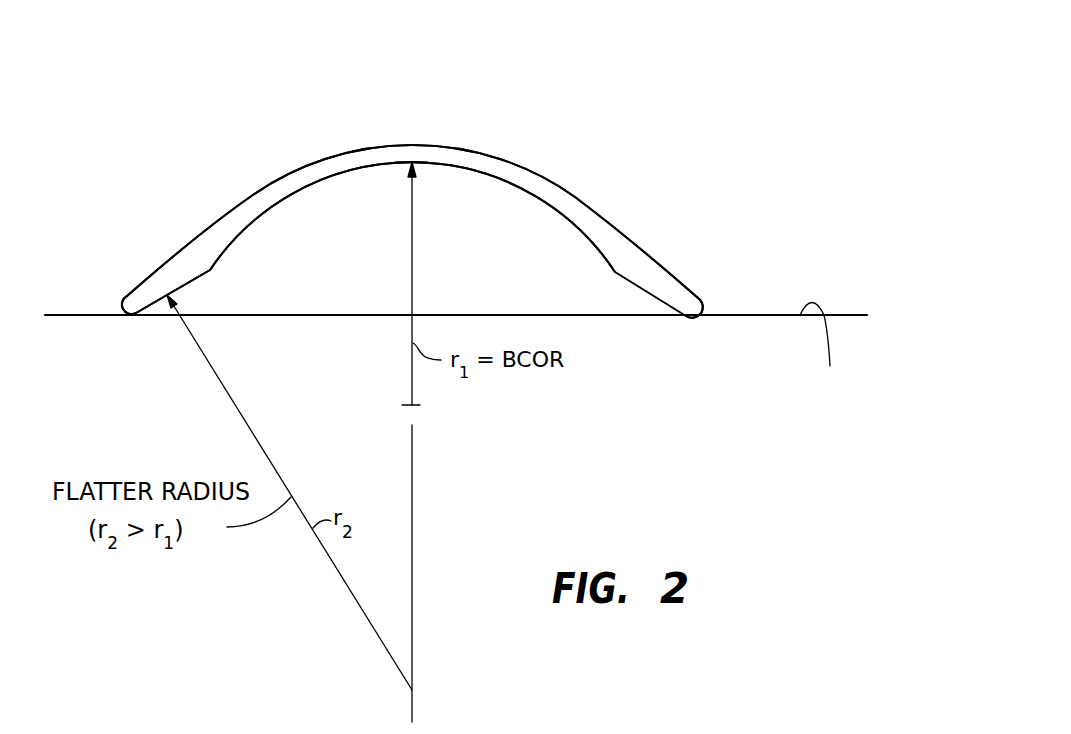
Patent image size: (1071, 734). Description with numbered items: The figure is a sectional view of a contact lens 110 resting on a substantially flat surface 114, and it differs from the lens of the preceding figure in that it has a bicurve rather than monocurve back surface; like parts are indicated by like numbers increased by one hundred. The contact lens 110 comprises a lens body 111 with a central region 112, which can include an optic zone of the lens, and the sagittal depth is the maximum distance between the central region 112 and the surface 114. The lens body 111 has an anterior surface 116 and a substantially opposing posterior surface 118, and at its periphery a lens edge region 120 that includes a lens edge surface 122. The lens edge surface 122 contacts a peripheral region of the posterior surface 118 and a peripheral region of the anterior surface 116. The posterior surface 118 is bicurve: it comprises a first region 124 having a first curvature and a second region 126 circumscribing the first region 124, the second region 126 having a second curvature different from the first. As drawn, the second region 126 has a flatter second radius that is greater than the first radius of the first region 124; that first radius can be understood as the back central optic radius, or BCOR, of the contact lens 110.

The contact lens 110 is at (650, 172).
The lens body 111 is at (526, 168).
The central region 112 is at (405, 162).
The substantially flat surface 114 is at (456, 354).
The anterior surface 116 is at (251, 196).
The posterior surface 118 is at (282, 200).
The lens edge region 120 is at (712, 286).
The lens edge surface 122 is at (702, 308).
The first region 124 is at (233, 240).
The second region 126 is at (188, 283).